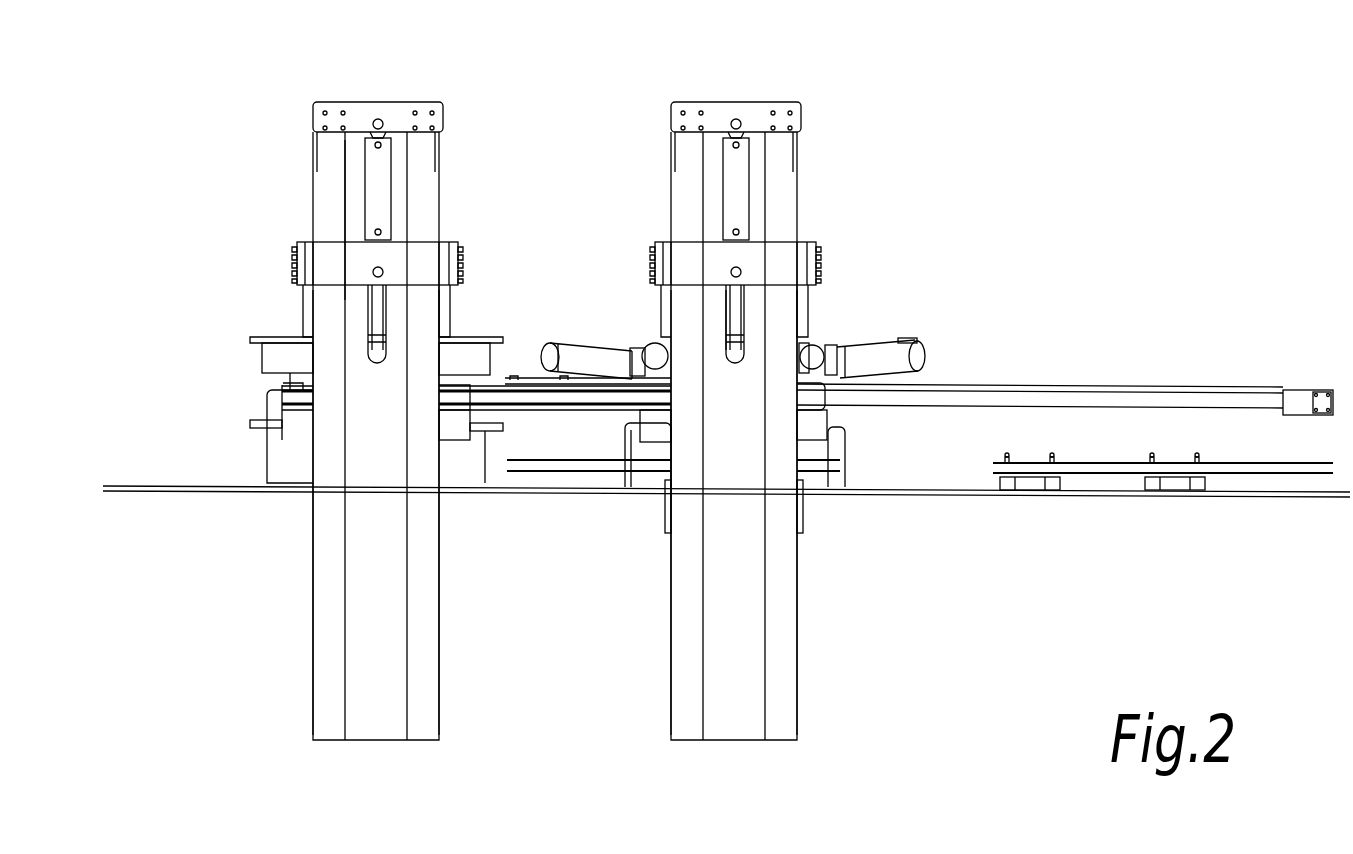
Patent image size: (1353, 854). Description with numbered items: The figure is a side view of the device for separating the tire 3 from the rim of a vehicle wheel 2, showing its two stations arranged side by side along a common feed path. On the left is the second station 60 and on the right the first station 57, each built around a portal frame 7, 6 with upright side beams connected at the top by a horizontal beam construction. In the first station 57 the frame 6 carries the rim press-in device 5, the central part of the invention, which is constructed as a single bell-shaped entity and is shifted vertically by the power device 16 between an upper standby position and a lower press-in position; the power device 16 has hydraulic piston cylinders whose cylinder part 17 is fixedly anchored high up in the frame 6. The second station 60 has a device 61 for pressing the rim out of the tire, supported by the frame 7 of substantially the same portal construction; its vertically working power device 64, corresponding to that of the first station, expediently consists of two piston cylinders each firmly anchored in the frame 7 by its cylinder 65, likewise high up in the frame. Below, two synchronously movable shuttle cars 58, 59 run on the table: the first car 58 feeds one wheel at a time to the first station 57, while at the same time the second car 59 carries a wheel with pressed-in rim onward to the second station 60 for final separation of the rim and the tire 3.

The vehicle wheel 2 is at (850, 445).
The tire 3 is at (842, 432).
The rim press-in device 5 is at (884, 336).
The frame 6 is at (817, 127).
The frame 7 is at (457, 121).
The power device 16 is at (733, 203).
The cylinder part 17 is at (737, 170).
The first station 57 is at (884, 214).
The shuttle car 58 is at (1121, 483).
The shuttle car 59 is at (613, 482).
The second station 60 is at (250, 334).
The device for pressing the rim out of the tire 61 is at (490, 188).
The power device 64 is at (363, 214).
The cylinder 65 is at (377, 176).